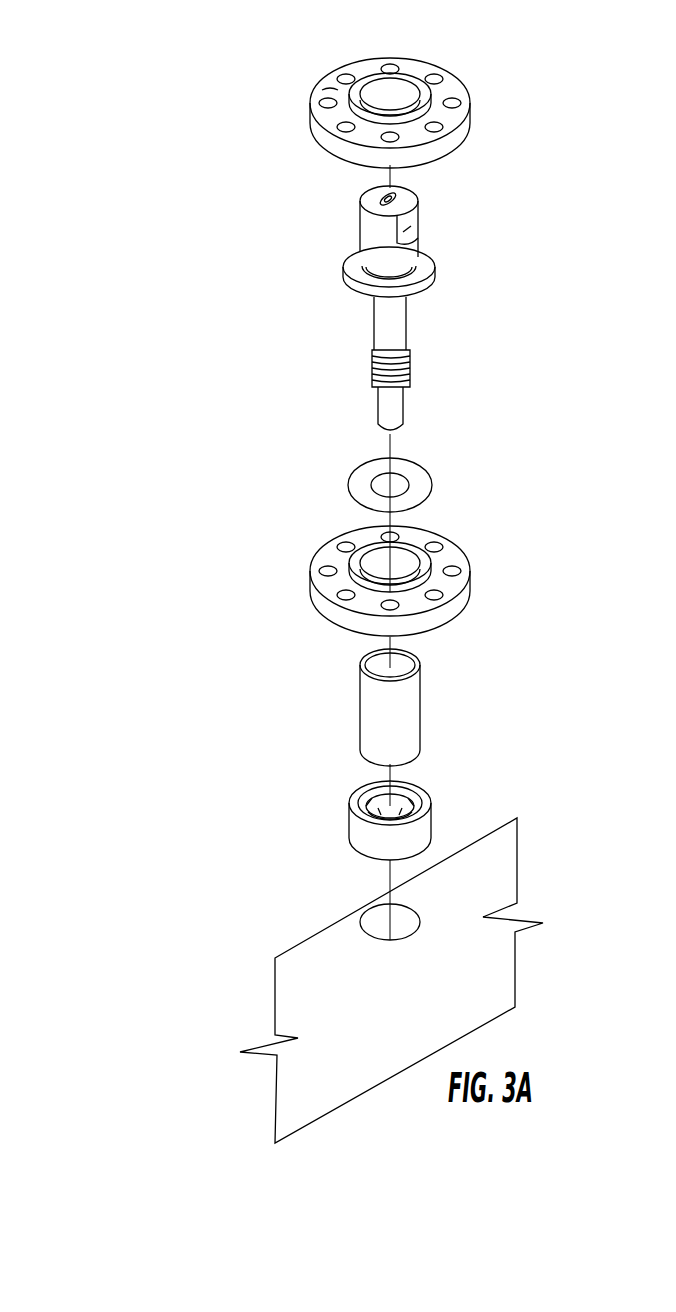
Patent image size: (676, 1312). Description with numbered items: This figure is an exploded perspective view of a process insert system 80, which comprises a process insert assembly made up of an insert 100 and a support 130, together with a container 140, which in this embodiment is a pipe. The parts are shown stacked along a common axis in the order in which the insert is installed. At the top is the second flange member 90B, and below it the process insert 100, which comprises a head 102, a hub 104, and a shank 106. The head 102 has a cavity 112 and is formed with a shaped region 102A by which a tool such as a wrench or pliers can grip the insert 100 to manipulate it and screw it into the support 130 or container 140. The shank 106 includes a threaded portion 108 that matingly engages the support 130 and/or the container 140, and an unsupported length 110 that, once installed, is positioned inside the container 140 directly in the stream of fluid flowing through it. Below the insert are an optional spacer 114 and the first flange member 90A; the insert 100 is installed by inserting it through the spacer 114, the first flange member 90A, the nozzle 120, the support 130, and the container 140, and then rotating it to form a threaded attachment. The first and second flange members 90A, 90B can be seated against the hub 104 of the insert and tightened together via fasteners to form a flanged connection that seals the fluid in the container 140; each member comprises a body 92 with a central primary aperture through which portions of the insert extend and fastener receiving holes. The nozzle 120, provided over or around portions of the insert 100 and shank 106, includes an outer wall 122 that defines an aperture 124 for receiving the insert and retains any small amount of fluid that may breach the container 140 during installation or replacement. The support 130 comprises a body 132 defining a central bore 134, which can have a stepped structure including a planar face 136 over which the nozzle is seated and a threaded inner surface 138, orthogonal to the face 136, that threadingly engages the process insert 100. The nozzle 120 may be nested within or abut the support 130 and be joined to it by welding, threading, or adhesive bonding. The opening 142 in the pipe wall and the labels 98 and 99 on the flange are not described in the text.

The process insert system 80 is at (118, 105).
The first flange member 90A is at (395, 530).
The second flange member 90B is at (392, 74).
The body 92 is at (333, 147).
The flange top surface 98 is at (330, 90).
The bore chamfer 99 is at (366, 560).
The process insert 100 is at (365, 302).
The head 102 is at (376, 212).
The shaped region 102A is at (418, 217).
The hub 104 is at (360, 279).
The shank 106 is at (355, 352).
The threaded portion 108 is at (372, 380).
The unsupported length 110 is at (405, 409).
The cavity 112 is at (378, 194).
The spacer 114 is at (428, 487).
The nozzle 120 is at (389, 697).
The outer surface or wall 122 is at (386, 697).
The aperture 124 is at (403, 663).
The support 130 is at (386, 793).
The body 132 is at (358, 825).
The central bore 134 is at (377, 792).
The planar face 136 is at (460, 790).
The inner surface 138 is at (375, 805).
The container 140 is at (391, 980).
The plate hole 142 is at (380, 925).